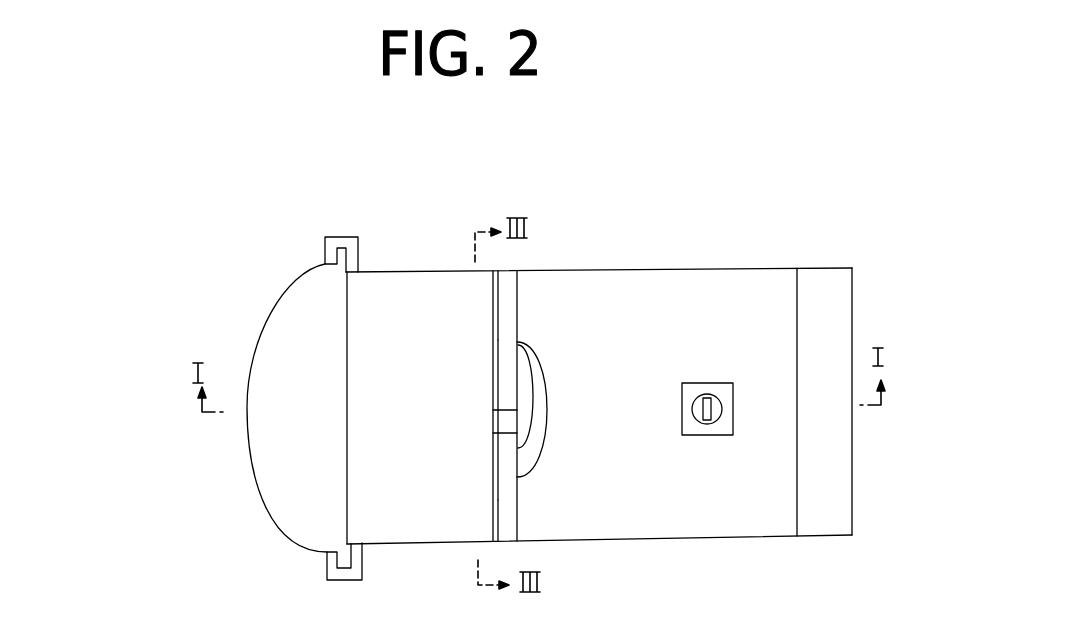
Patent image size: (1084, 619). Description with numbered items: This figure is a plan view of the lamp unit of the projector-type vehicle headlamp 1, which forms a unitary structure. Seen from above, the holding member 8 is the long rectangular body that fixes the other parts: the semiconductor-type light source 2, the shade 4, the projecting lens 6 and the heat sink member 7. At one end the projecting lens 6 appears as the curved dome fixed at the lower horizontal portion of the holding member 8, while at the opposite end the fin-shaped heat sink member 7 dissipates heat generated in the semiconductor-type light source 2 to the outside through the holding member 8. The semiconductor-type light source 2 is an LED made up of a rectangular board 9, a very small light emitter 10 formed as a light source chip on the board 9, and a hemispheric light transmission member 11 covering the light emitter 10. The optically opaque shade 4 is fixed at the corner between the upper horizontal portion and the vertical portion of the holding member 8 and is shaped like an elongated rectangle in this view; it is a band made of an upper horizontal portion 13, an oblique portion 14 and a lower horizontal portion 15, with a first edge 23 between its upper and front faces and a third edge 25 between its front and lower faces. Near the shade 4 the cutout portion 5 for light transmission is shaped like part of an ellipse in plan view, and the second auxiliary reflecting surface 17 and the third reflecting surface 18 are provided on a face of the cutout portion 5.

The vehicle headlamp 1 is at (362, 216).
The semiconductor-type light source 2 is at (714, 421).
The shade 4 is at (492, 338).
The cutout portion 5 is at (566, 382).
The projecting lens 6 is at (268, 312).
The heat sink member 7 is at (824, 505).
The holding member 8 is at (400, 532).
The board 9 is at (683, 435).
The light emitter 10 is at (706, 422).
The light transmission member 11 is at (718, 420).
The upper horizontal portion 13 is at (505, 465).
The oblique portion 14 is at (493, 422).
The lower horizontal portion 15 is at (495, 373).
The second auxiliary reflecting surface 17 is at (535, 375).
The third reflecting surface 18 is at (520, 410).
The first edge 23 is at (493, 287).
The third edge 25 is at (493, 510).